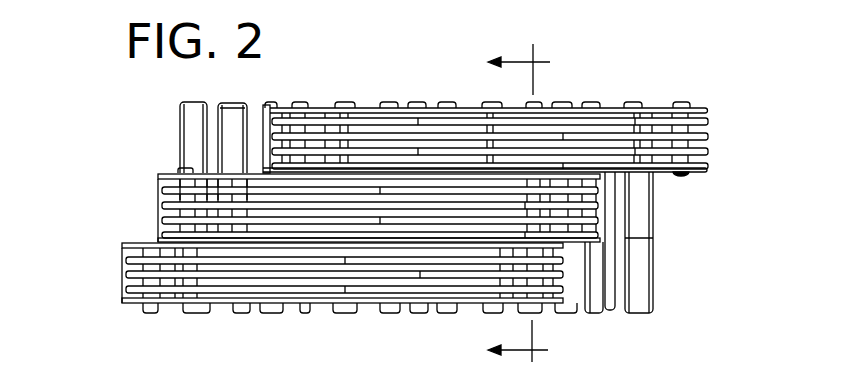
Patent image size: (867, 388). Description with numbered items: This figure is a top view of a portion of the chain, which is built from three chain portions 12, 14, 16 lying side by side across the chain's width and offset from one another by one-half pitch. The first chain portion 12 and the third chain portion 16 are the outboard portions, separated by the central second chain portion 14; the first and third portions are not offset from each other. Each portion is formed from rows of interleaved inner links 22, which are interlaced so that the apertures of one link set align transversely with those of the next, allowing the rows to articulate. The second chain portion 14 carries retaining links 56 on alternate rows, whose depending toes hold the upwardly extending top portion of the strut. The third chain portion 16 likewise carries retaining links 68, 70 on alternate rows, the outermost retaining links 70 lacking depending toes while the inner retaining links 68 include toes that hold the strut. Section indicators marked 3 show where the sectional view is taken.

The section line 3- 3 is at (521, 208).
The first chain portion 12 is at (108, 282).
The second chain portion 14 is at (146, 206).
The third chain portion 16 is at (160, 118).
The inner links 22 is at (710, 121).
The retaining link 56 is at (165, 175).
The retaining link 68 is at (712, 169).
The retaining link 70 is at (705, 110).